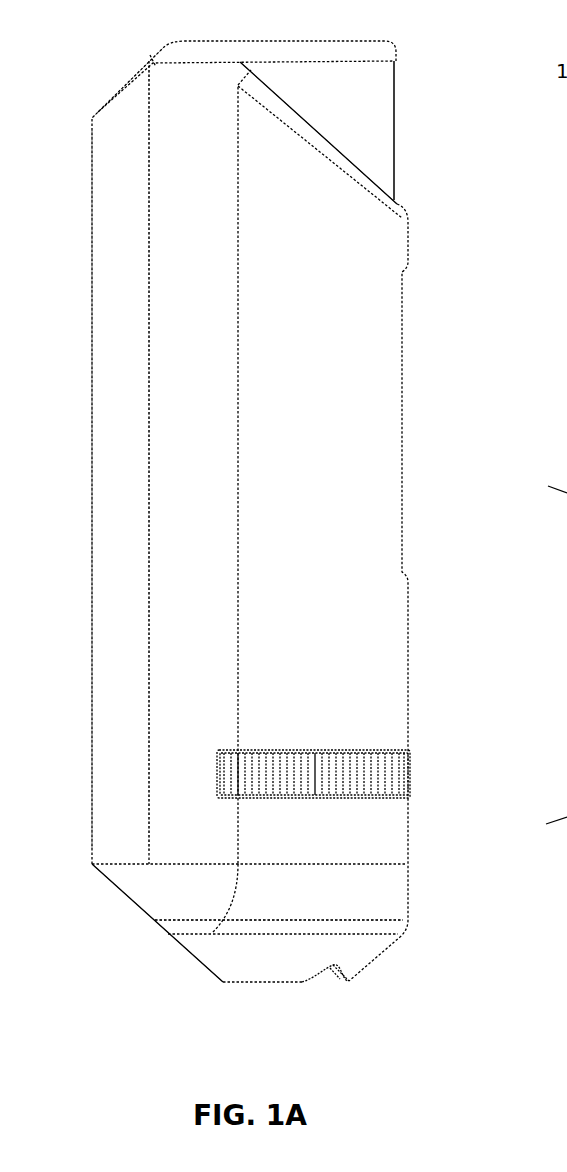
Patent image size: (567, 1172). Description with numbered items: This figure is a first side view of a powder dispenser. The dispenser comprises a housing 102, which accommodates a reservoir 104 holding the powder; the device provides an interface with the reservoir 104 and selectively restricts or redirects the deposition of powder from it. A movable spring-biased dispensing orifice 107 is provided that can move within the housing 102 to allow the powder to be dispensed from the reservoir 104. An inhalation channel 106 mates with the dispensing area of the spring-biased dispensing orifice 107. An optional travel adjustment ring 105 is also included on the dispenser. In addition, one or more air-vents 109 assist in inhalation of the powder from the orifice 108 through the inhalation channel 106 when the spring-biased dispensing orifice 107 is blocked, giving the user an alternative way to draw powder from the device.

The housing 102 is at (357, 535).
The reservoir 104 is at (373, 123).
The travel adjustment ring 105 is at (392, 775).
The inhalation channel 106 is at (113, 658).
The spring-biased dispensing orifice 107 is at (383, 884).
The orifice 108 is at (115, 93).
The air-vent 109 is at (332, 983).